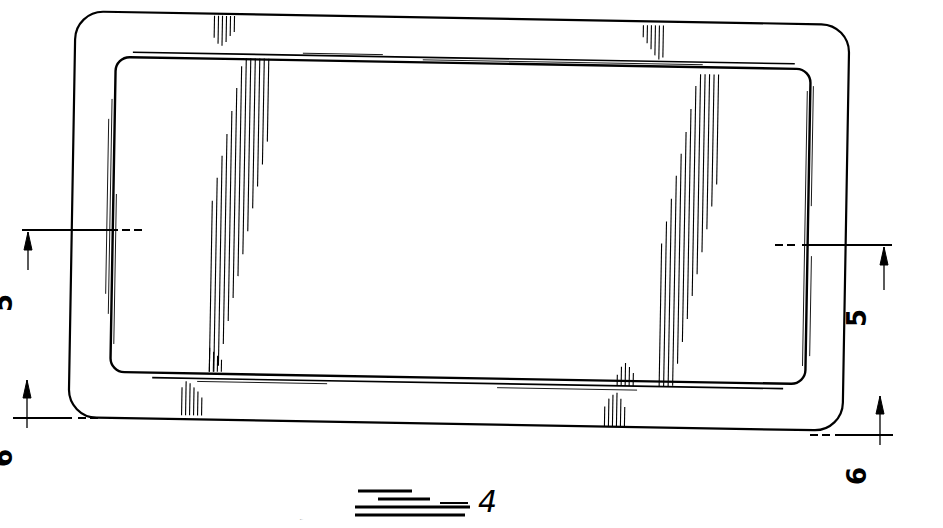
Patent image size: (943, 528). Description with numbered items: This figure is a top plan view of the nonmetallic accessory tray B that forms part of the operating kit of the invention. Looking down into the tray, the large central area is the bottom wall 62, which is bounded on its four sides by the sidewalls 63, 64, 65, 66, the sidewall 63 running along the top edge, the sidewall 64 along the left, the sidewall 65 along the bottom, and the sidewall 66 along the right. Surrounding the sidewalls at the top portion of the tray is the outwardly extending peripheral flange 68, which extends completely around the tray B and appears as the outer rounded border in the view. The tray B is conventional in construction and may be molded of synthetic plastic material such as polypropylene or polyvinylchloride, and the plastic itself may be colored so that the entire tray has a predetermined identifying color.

The accessory tray B is at (843, 30).
The bottom wall 62 is at (460, 220).
The sidewall 63 is at (455, 64).
The sidewall 64 is at (115, 180).
The sidewall 65 is at (457, 378).
The sidewall 66 is at (806, 180).
The peripheral flange 68 is at (583, 36).